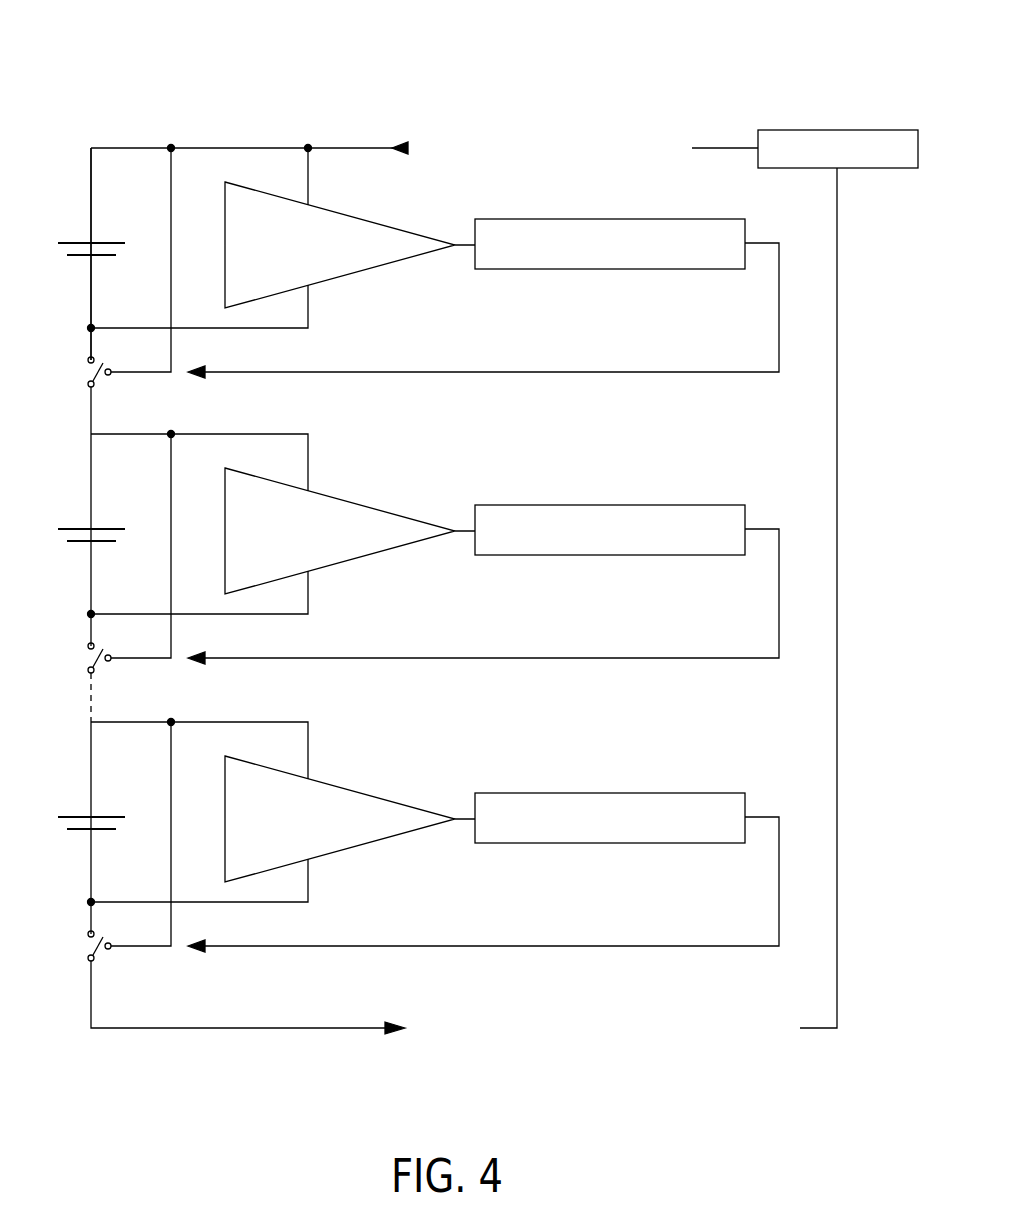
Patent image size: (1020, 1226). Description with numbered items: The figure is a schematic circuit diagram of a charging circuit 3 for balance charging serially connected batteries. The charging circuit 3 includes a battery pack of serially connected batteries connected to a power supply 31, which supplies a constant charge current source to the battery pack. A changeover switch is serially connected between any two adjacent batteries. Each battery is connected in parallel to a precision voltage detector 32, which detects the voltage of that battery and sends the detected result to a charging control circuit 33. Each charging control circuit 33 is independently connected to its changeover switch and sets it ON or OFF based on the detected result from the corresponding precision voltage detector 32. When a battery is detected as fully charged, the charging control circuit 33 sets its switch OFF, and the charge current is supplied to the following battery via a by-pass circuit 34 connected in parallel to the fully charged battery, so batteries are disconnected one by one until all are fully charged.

The charging circuit 3 is at (457, 103).
The power supply 31 is at (788, 130).
The precision voltage detector 32 is at (368, 221).
The charging control circuit 33 is at (748, 224).
The by-pass circuit 34 is at (171, 205).